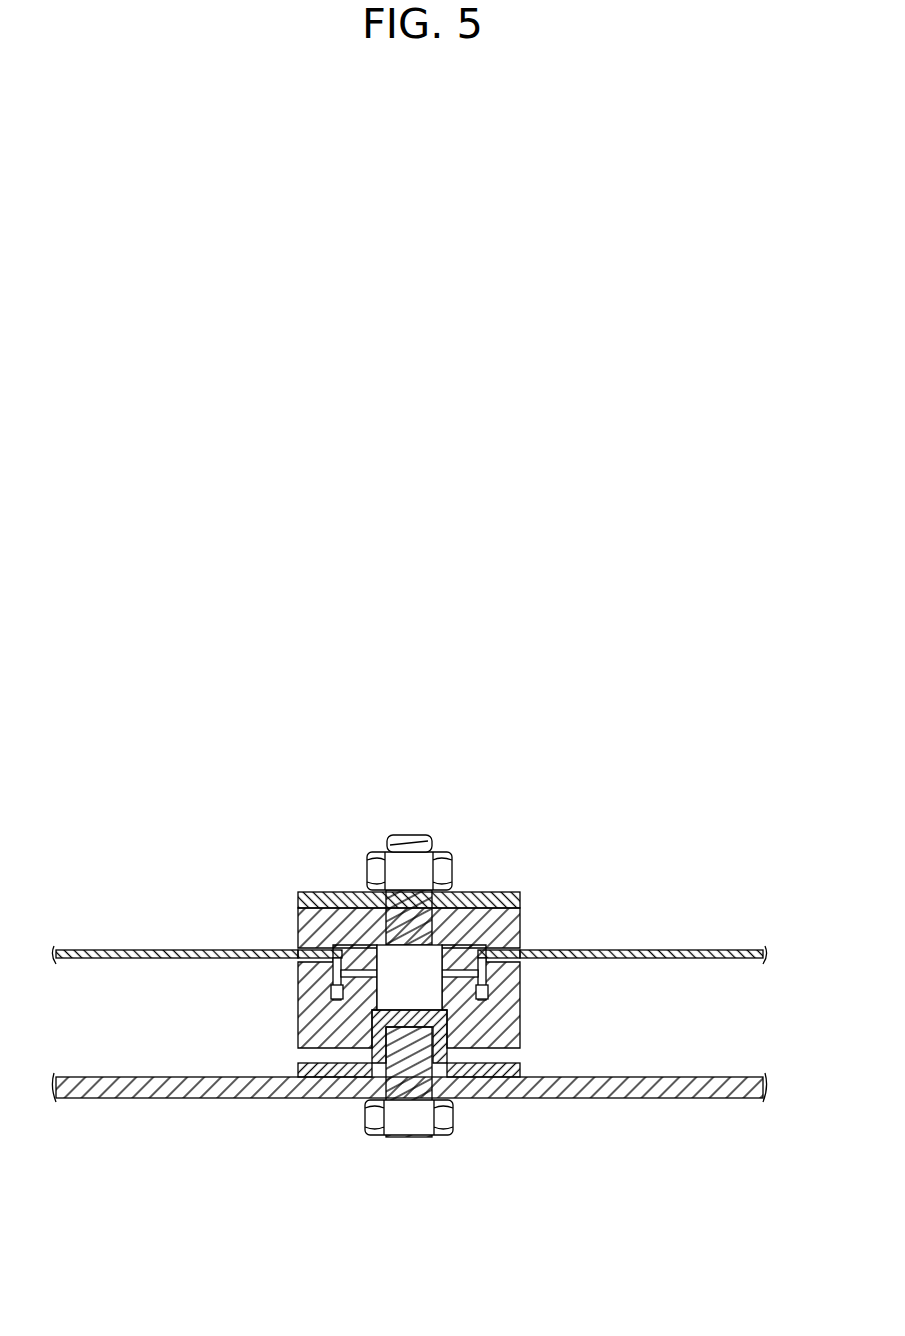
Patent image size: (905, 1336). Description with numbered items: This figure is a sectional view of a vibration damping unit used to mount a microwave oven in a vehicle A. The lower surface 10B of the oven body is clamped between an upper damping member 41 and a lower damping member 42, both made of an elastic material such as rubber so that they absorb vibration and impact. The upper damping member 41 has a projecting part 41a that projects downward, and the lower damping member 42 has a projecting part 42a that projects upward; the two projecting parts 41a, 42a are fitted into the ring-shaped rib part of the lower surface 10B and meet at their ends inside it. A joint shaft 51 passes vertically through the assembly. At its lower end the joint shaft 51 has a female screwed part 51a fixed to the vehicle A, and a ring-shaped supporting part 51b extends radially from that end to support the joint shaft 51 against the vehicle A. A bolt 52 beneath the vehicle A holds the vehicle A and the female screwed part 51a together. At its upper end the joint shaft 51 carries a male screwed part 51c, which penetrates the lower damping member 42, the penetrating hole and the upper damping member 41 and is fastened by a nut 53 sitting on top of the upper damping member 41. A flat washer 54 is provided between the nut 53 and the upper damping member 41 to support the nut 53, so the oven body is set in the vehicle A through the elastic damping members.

The lower surface 10B is at (727, 950).
The vehicle A is at (675, 1100).
The flat washer 54 is at (313, 893).
The upper damping member 41 is at (520, 925).
The projecting part 41a is at (300, 951).
The lower damping member 42 is at (515, 1030).
The projecting part 42a is at (510, 985).
The joint shaft 51 is at (398, 990).
The female screwed part 51a is at (330, 1077).
The supporting part 51b is at (305, 1060).
The male screwed part 51c is at (405, 836).
The bolt 52 is at (413, 1120).
The nut 53 is at (447, 870).